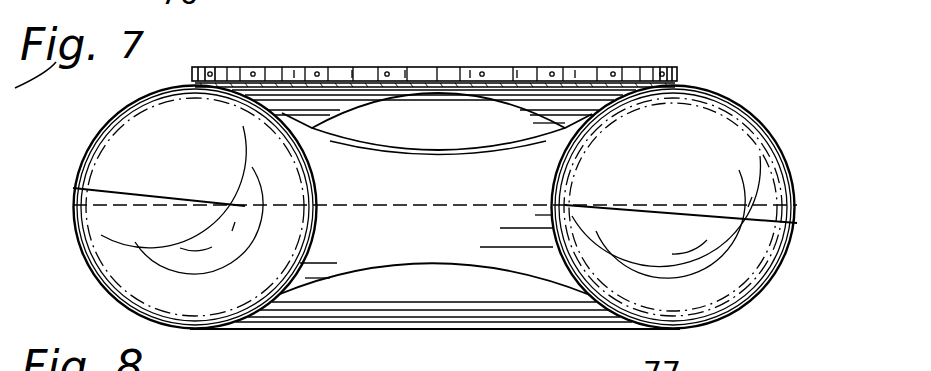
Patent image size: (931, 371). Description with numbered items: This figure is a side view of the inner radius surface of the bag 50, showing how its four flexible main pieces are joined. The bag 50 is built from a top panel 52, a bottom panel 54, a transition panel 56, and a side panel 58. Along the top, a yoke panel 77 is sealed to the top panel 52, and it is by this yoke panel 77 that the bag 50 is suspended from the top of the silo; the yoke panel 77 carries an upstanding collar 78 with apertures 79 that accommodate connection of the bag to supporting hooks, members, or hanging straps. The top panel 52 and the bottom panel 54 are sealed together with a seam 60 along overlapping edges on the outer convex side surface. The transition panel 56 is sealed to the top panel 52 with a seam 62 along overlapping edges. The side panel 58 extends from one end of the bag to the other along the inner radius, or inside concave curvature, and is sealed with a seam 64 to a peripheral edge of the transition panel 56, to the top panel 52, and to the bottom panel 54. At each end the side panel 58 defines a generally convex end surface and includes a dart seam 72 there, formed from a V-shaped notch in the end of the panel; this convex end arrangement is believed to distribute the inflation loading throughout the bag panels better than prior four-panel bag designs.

The bag 50 is at (750, 90).
The top panel 52 is at (583, 100).
The bottom panel 54 is at (476, 304).
The transition panel 56 is at (421, 118).
The side panel 58 is at (740, 146).
The seam 60 is at (792, 172).
The seam 62 is at (468, 97).
The seam 64 is at (388, 149).
The dart seam 72 is at (138, 193).
The yoke panel 77 is at (681, 70).
The collar 78 is at (347, 72).
The apertures 79 is at (266, 66).